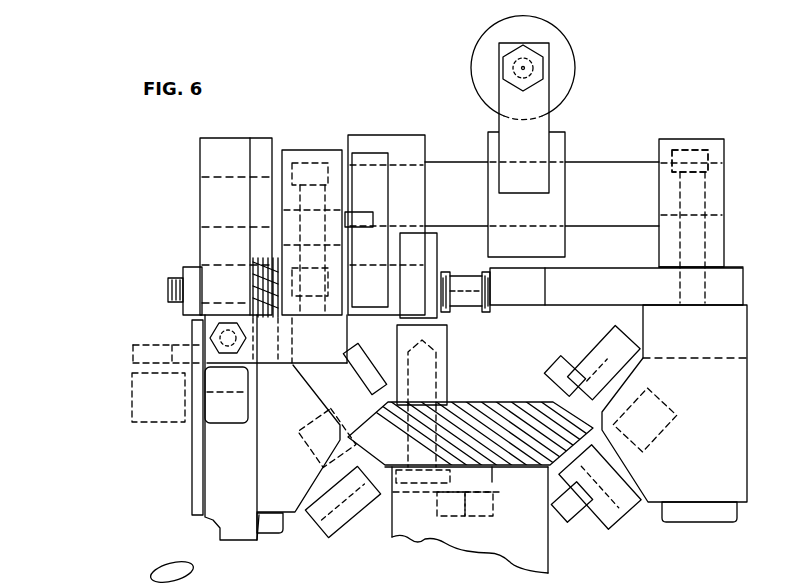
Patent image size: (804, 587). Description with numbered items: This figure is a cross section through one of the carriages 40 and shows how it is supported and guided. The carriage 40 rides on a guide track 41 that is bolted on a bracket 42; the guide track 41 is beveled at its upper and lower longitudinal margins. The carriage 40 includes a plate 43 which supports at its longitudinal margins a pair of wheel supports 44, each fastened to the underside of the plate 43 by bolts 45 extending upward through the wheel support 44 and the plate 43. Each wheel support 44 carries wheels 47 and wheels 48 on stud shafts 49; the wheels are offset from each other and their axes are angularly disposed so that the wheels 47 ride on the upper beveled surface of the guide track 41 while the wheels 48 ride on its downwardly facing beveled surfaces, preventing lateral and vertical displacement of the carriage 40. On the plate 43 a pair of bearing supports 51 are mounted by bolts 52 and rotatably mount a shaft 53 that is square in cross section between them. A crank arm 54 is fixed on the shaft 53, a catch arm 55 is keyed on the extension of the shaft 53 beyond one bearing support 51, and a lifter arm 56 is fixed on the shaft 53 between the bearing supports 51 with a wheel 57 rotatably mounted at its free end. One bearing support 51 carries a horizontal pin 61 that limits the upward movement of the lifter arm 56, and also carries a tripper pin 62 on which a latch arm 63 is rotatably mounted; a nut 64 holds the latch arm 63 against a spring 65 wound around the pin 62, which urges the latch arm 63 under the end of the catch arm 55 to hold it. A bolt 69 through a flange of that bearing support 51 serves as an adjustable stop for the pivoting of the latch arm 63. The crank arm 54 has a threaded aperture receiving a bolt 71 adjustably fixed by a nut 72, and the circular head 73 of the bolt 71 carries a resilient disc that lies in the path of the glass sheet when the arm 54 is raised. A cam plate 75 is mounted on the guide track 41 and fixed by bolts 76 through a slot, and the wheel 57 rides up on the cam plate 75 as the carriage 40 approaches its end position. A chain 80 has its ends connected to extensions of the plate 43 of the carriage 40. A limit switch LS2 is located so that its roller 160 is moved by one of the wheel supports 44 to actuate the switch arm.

The carriage 40 is at (752, 285).
The guide track 41 is at (523, 402).
The bracket 42 is at (548, 560).
The plate 43 is at (733, 267).
The wheel support 44 is at (192, 471).
The bolt 45 is at (272, 533).
The wheel 47 is at (615, 345).
The wheel 48 is at (320, 535).
The stud shaft 49 is at (576, 358).
The bearing support 51 is at (314, 150).
The bolt 52 is at (694, 150).
The shaft 53 is at (620, 162).
The crank arm 54 is at (549, 118).
The catch arm 55 is at (232, 138).
The lifter arm 56 is at (392, 135).
The wheel 57 is at (437, 242).
The pin 61 is at (368, 212).
The tripper pin 62 is at (168, 290).
The latch arm 63 is at (221, 430).
The nut 64 is at (183, 268).
The spring 65 is at (254, 258).
The bolt 69 is at (210, 338).
The bolt 71 is at (513, 68).
The nut 72 is at (543, 68).
The head 73 is at (555, 42).
The cam plate 75 is at (448, 361).
The bolt 76 is at (420, 484).
The chain 80 is at (482, 310).
The roller 160 is at (155, 422).
The limit switch LS2 is at (138, 345).